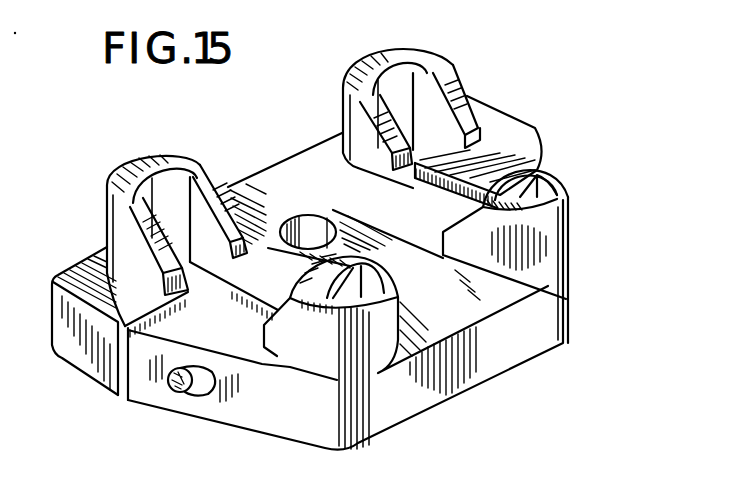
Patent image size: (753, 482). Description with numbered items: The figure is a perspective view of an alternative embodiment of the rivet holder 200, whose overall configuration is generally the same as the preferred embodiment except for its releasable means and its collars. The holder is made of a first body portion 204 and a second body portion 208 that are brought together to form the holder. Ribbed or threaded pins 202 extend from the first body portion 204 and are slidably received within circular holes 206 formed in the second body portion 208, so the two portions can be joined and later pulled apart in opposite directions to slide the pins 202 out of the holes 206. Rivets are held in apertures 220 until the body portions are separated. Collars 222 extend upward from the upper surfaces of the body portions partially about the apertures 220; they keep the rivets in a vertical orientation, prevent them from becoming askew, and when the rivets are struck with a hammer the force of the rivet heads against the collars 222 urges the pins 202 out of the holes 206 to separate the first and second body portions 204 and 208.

The rivet holder 200 is at (88, 210).
The pins 202 is at (174, 393).
The first body portion 204 is at (266, 164).
The circular holes 206 is at (203, 397).
The second body portion 208 is at (474, 385).
The apertures 220 is at (298, 215).
The collars 222 is at (137, 160).